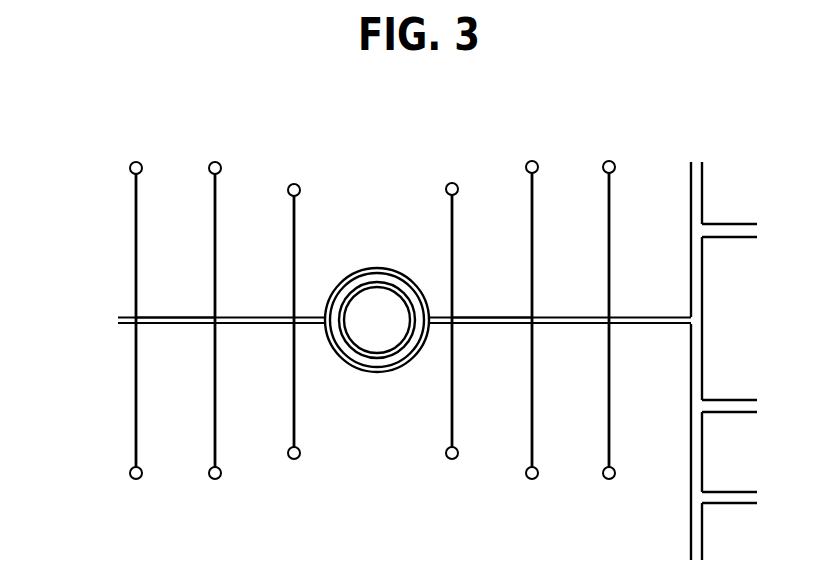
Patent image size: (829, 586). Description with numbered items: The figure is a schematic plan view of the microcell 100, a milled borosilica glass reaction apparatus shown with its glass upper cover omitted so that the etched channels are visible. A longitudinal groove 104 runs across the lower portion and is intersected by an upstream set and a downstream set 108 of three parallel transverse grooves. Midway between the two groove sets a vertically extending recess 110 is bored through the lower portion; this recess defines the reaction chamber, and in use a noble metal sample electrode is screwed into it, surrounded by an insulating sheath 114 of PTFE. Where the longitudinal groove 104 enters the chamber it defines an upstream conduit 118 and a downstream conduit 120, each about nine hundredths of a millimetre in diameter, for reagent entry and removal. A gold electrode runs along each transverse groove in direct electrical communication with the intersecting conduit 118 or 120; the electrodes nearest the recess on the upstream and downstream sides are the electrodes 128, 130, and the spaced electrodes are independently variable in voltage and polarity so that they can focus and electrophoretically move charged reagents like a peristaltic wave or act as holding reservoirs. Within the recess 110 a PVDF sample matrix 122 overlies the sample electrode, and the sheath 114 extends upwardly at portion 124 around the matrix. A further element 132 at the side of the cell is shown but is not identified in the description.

The microcell 100 is at (338, 141).
The longitudinal groove 104 is at (168, 316).
The downstream set of transverse grooves 108 is at (267, 481).
The recess 110 is at (352, 279).
The insulating sheath 114 is at (407, 280).
The upstream conduit 118 is at (497, 326).
The downstream conduit 120 is at (174, 328).
The sample matrix 122 is at (390, 343).
The upward extension of insulating sheath 124 is at (361, 357).
The upstream nearest electrode 128 is at (455, 212).
The downstream nearest electrode 130 is at (297, 212).
The connector / feed structure 132 is at (705, 303).